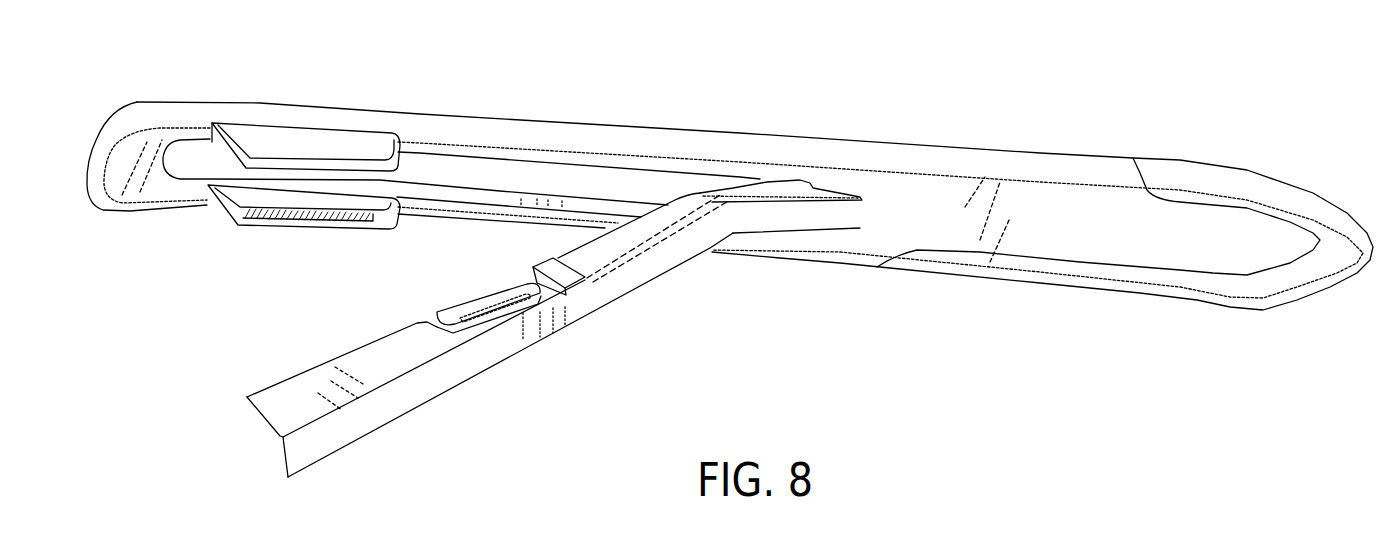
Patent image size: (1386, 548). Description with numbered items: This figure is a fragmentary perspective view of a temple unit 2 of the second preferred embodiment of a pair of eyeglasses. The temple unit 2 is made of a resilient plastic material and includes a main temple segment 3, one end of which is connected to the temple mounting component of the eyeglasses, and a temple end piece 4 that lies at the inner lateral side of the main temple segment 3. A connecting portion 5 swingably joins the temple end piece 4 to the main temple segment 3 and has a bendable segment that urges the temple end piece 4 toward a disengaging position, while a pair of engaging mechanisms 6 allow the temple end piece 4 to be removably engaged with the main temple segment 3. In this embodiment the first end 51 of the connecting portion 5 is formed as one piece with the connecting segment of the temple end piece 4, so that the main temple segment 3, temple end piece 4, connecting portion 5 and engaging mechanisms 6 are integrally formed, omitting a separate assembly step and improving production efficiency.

The temple unit 2 is at (932, 66).
The main temple segment 3 is at (397, 399).
The temple end piece 4 is at (1023, 147).
The connecting portion 5 is at (752, 222).
The first end 51 is at (821, 205).
The engaging mechanism 6 is at (227, 210).